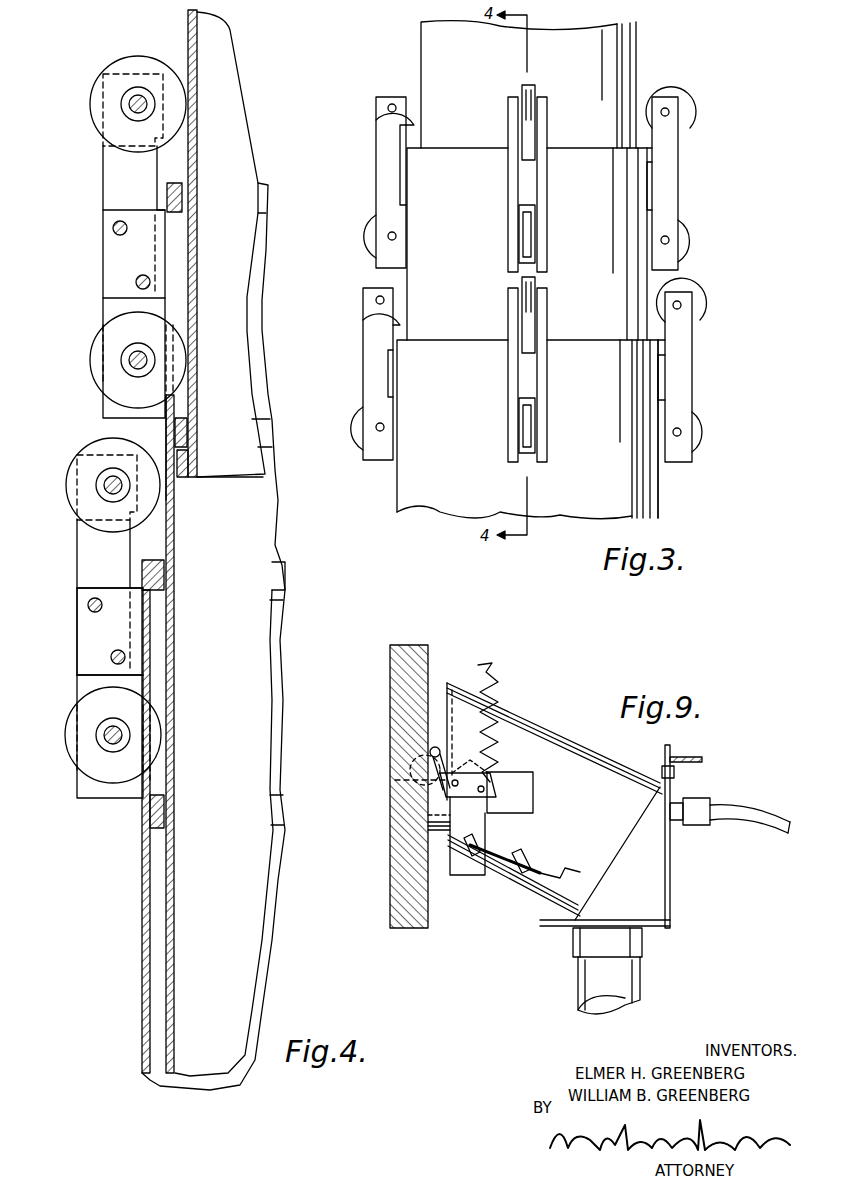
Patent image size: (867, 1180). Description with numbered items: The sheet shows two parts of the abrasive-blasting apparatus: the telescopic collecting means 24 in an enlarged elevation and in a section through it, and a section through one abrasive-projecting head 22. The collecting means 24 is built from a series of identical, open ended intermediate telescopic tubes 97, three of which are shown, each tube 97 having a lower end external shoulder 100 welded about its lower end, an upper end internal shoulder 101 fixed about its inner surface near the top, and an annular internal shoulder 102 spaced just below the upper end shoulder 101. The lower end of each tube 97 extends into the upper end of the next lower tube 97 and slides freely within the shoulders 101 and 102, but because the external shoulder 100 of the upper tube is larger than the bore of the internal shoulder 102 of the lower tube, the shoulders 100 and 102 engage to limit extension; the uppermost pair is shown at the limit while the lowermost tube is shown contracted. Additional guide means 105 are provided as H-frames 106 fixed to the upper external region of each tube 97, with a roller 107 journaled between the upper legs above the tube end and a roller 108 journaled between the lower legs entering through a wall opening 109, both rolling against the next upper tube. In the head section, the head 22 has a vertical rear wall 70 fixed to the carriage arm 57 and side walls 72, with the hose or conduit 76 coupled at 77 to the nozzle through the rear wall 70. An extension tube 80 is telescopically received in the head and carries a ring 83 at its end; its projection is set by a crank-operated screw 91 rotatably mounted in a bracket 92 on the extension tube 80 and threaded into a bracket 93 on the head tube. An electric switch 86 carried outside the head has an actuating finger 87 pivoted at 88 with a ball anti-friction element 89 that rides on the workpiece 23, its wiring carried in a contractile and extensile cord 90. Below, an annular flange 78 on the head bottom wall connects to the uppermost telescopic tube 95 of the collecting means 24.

In FIG. 9, the abrasive-projecting head 22 is at (576, 732).
In FIG. 9, the workpiece 23 is at (394, 891).
In FIG. 3, the collecting means 24 is at (662, 508).
In FIG. 9, the carriage arm 57 is at (702, 757).
In FIG. 9, the rear wall 70 is at (672, 872).
In FIG. 9, the side wall 72 is at (655, 902).
In FIG. 9, the hose or conduit 76 is at (758, 812).
In FIG. 9, the coupling 77 is at (700, 822).
In FIG. 9, the annular flange 78 is at (573, 945).
In FIG. 9, the extension tube 80 is at (455, 683).
In FIG. 9, the annular tube or ring 83 is at (441, 835).
In FIG. 9, the electric switch 86 is at (533, 787).
In FIG. 9, the actuating finger 87 is at (440, 770).
In FIG. 9, the pivot 88 is at (457, 785).
In FIG. 9, the anti-friction element 89 is at (430, 752).
In FIG. 9, the contractile and extensile cord 90 is at (494, 668).
In FIG. 9, the crank-operated screw 91 is at (492, 870).
In FIG. 9, the bracket 92 is at (472, 856).
In FIG. 9, the bracket 93 is at (524, 873).
In FIG. 9, the uppermost telescopic tube 95 is at (632, 983).
In FIG. 4, the intermediate telescopic tube 97 is at (250, 150).
In FIG. 3, the intermediate telescopic tube 97 is at (420, 192).
In FIG. 4, the lower end external shoulder 100 is at (180, 478).
In FIG. 4, the upper end internal shoulder 101 is at (174, 182).
In FIG. 4, the internal shoulder 102 is at (185, 430).
In FIG. 4, the guide means 105 is at (73, 650).
In FIG. 3, the guide means 105 is at (702, 366).
In FIG. 4, the H-frame 106 is at (103, 268).
In FIG. 3, the H-frame 106 is at (378, 158).
In FIG. 4, the roller 107 is at (90, 105).
In FIG. 3, the roller 107 is at (386, 90).
In FIG. 4, the roller 108 is at (92, 356).
In FIG. 3, the roller 108 is at (372, 243).
In FIG. 4, the wall opening 109 is at (175, 400).